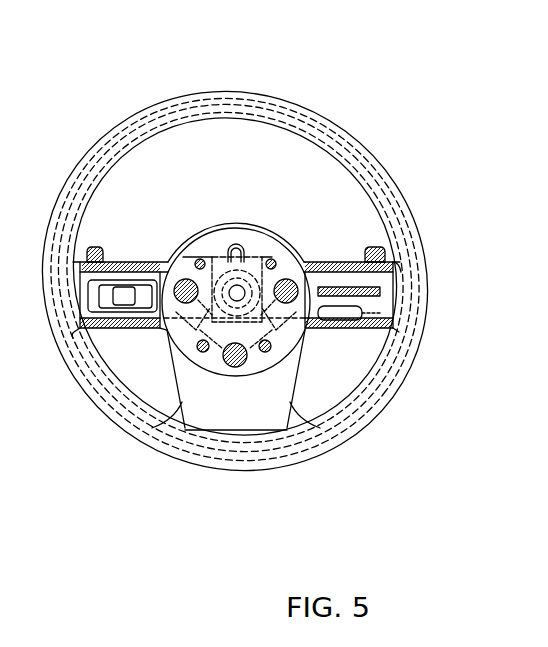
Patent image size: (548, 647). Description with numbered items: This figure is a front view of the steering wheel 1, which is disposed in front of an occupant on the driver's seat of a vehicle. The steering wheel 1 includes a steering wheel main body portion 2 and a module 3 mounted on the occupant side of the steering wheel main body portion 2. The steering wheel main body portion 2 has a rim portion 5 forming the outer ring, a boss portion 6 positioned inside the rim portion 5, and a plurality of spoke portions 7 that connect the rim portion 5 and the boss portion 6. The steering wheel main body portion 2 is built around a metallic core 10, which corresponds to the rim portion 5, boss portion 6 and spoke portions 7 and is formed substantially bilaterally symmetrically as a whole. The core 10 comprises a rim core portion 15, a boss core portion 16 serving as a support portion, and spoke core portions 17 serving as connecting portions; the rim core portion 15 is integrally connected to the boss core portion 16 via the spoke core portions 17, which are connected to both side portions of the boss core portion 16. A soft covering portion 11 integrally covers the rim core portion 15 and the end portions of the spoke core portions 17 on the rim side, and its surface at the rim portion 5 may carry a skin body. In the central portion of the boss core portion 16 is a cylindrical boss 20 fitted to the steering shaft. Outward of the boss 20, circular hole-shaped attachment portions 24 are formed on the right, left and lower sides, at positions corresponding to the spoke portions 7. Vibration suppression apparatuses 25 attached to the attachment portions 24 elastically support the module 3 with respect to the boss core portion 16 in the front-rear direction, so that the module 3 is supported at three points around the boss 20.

The steering wheel 1 is at (349, 68).
The steering wheel main body portion 2 is at (388, 169).
The module 3 is at (292, 246).
The rim portion 5 is at (285, 468).
The boss portion 6 is at (236, 228).
The spoke portions 7 is at (98, 336).
The core 10 is at (407, 207).
The covering portion 11 is at (426, 242).
The rim core portion 15 is at (127, 131).
The boss core portion 16 is at (213, 253).
The spoke core portions 17 is at (125, 262).
The boss 20 is at (222, 320).
The attachment portions 24 is at (168, 343).
The vibration suppression apparatuses 25 is at (178, 303).